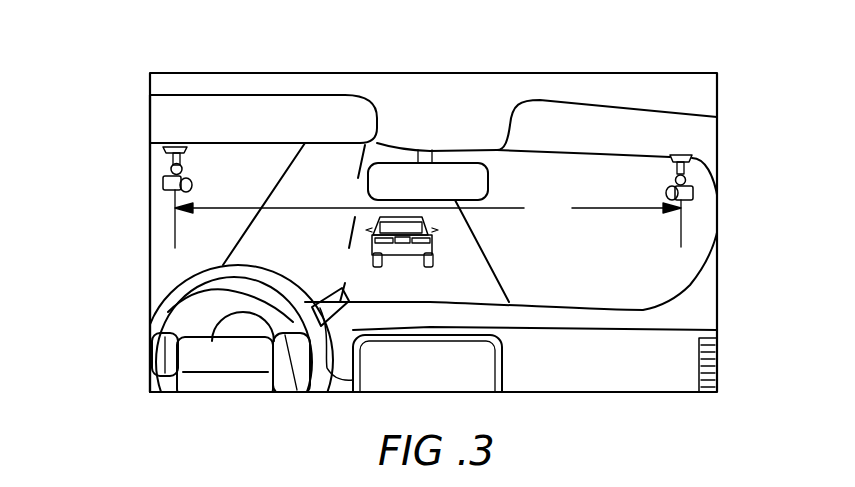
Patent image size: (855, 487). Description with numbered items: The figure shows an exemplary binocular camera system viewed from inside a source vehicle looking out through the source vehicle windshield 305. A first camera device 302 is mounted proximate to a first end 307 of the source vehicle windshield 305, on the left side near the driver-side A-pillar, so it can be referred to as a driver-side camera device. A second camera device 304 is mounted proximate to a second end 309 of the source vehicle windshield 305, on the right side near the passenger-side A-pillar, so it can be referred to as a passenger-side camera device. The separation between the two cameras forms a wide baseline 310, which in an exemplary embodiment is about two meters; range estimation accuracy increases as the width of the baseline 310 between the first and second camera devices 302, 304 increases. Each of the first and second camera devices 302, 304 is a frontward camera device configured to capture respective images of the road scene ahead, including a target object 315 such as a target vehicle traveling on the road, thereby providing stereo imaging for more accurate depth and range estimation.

The first camera device 302 is at (163, 183).
The second camera device 304 is at (693, 193).
The source vehicle windshield 305 is at (548, 150).
The first end 307 is at (150, 157).
The second end 309 is at (720, 194).
The wide baseline 310 is at (566, 221).
The target object 315 is at (432, 240).